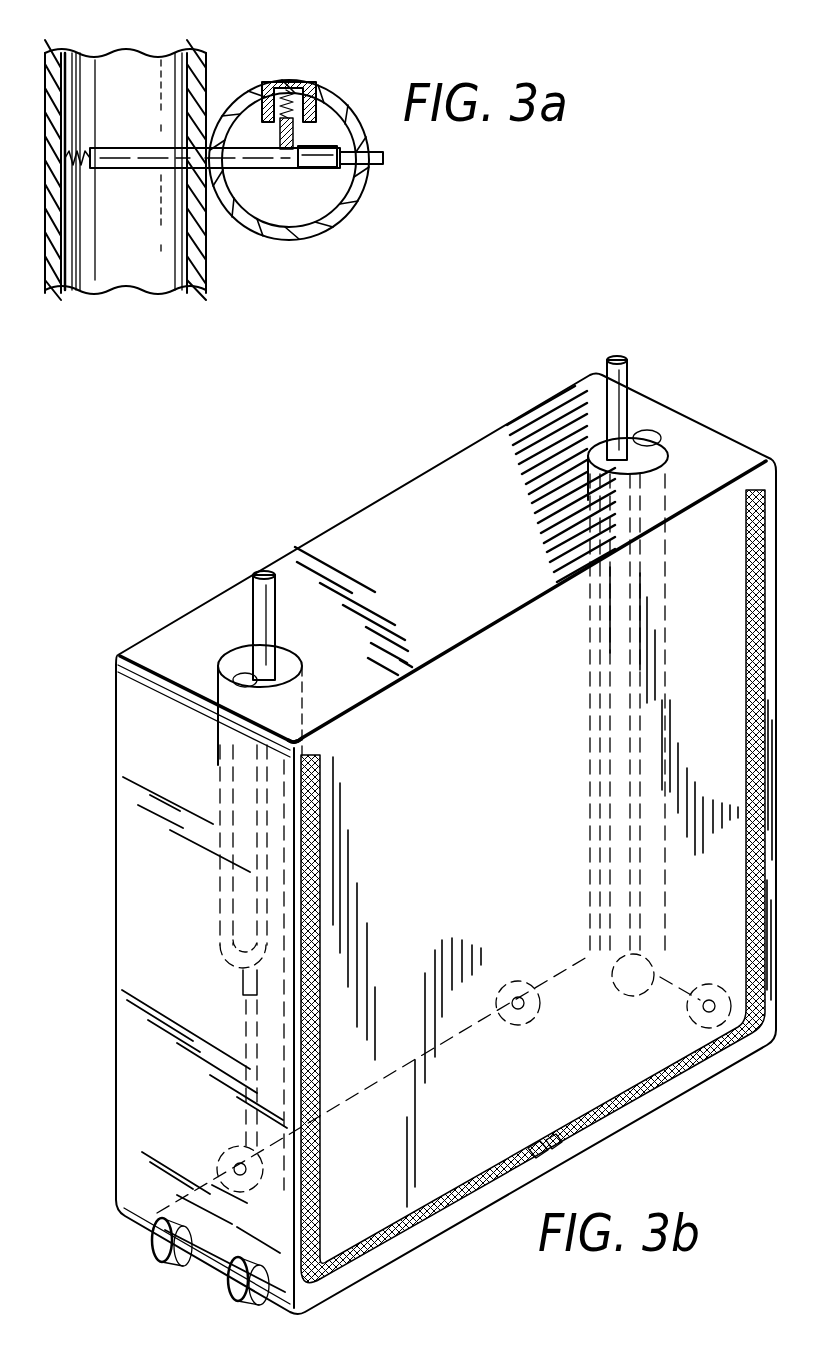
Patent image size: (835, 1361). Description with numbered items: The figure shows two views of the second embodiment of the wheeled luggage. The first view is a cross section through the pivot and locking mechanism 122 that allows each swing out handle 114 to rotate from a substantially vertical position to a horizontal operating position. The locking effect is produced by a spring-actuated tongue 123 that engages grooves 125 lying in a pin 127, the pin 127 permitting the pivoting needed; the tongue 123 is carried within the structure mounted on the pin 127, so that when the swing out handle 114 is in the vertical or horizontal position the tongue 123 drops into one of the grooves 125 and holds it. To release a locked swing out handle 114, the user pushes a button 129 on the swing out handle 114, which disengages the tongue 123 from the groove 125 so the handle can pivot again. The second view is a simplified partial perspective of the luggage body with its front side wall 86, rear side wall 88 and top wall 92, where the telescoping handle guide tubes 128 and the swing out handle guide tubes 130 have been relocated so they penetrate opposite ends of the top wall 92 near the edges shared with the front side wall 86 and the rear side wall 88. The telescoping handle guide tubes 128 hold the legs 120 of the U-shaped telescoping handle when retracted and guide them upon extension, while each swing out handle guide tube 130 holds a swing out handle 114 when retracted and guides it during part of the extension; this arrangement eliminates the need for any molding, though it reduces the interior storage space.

In FIG. 3b, the front side wall 86 is at (134, 715).
In FIG. 3b, the rear side wall 88 is at (737, 447).
In FIG. 3b, the top wall 92 is at (305, 712).
In FIG. 3a, the swing out handle 114 is at (342, 84).
In FIG. 3b, the legs of the U-shaped telescoping handle 120 is at (630, 363).
In FIG. 3a, the pivot and locking mechanism 122 is at (137, 80).
In FIG. 3a, the spring-actuated tongue 123 is at (305, 83).
In FIG. 3a, the grooves 125 is at (286, 168).
In FIG. 3a, the pin 127 is at (127, 148).
In FIG. 3b, the telescoping handle guide tube 128 is at (246, 999).
In FIG. 3a, the button 129 is at (387, 153).
In FIG. 3b, the swing out handle guide tube 130 is at (210, 853).